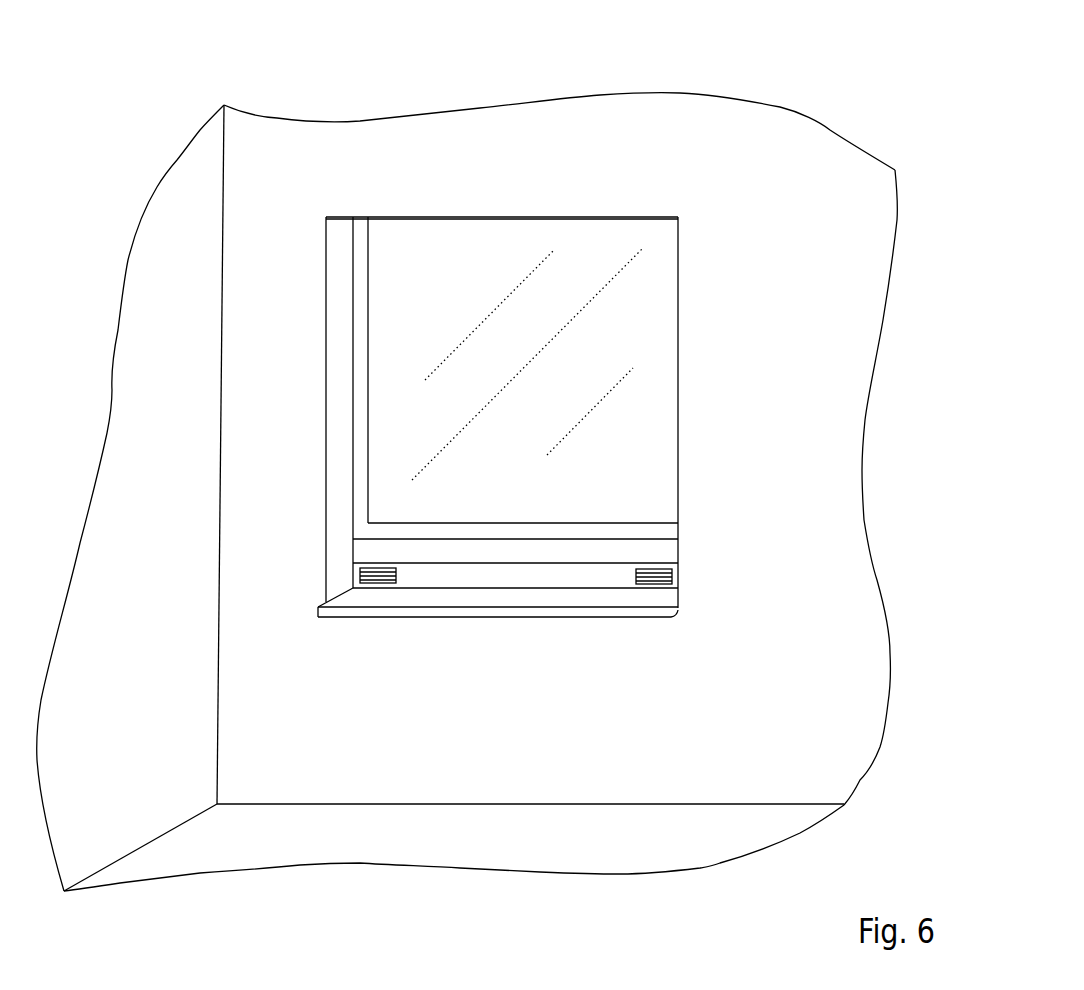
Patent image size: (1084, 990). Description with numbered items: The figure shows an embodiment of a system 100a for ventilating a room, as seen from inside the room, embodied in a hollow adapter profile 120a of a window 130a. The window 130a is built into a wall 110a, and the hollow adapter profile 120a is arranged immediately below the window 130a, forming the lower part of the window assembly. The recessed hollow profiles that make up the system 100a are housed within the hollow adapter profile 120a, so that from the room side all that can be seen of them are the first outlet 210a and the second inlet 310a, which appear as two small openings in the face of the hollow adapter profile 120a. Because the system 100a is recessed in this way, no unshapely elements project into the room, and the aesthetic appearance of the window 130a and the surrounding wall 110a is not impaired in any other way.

The wall 110a is at (798, 167).
The system for ventilating a room 100a is at (539, 461).
The window 130a is at (633, 452).
The hollow adapter profile 120a is at (514, 578).
The first outlet 210a is at (380, 580).
The second inlet 310a is at (652, 582).